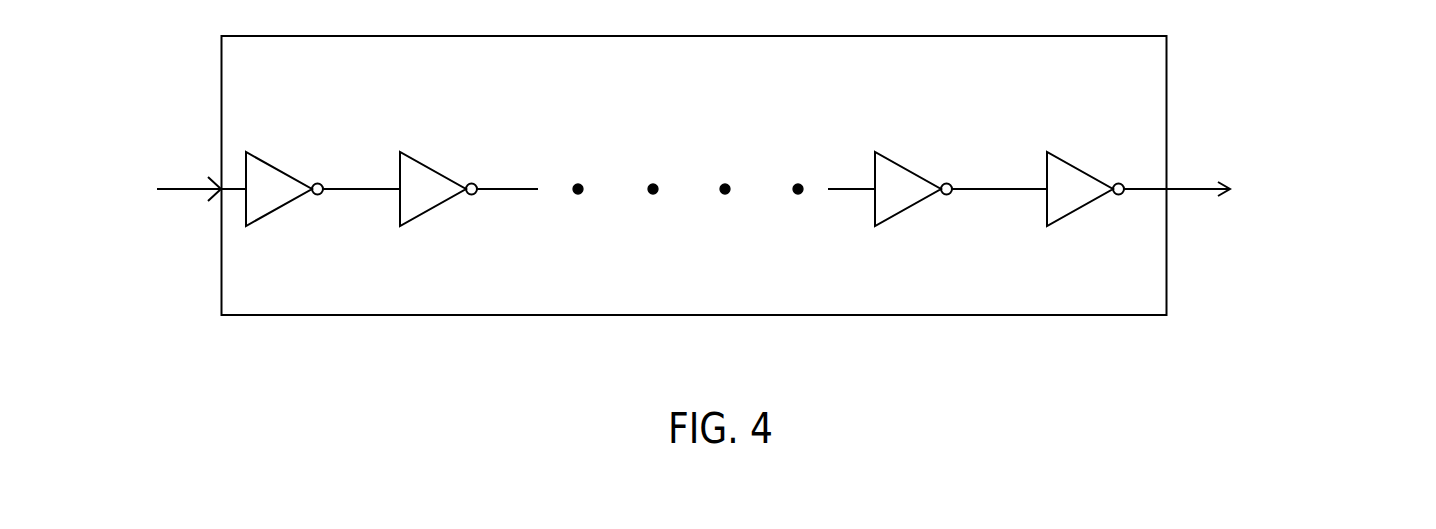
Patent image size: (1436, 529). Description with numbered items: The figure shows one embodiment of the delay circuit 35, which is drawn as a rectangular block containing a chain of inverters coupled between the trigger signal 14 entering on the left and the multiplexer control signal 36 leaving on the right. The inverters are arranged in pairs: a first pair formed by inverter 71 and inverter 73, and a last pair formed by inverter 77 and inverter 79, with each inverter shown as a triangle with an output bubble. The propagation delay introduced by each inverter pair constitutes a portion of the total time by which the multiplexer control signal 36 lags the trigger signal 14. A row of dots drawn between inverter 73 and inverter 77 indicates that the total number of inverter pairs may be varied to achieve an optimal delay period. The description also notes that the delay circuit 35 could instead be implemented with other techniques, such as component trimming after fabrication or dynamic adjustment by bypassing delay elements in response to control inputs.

The delay circuit 35 is at (502, 123).
The trigger signal 14 is at (153, 196).
The inverter 71 is at (277, 213).
The inverter 73 is at (430, 213).
The inverter 77 is at (907, 213).
The inverter 79 is at (1078, 213).
The multiplexer control signal 36 is at (1264, 206).